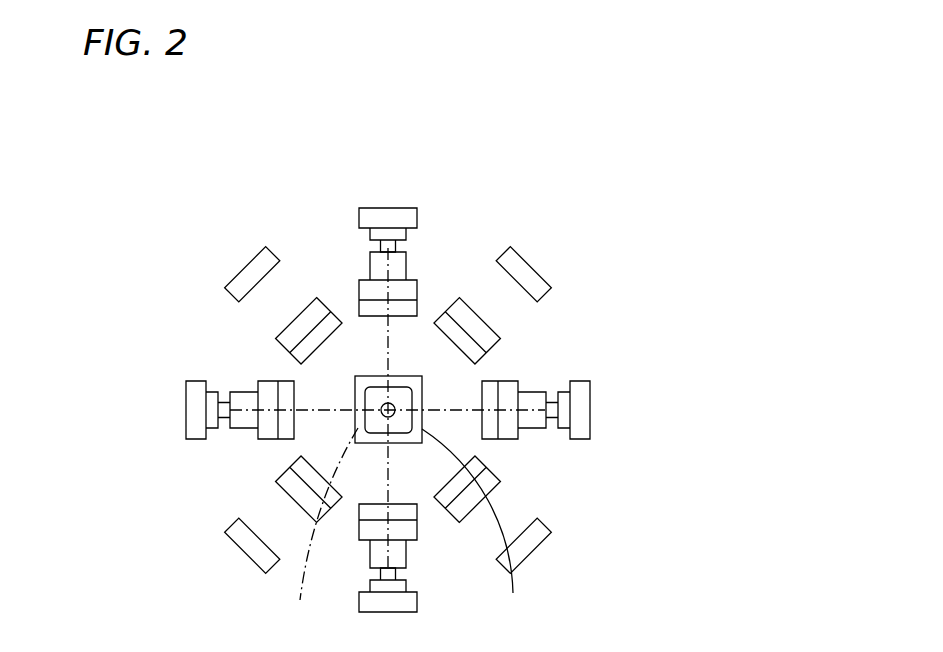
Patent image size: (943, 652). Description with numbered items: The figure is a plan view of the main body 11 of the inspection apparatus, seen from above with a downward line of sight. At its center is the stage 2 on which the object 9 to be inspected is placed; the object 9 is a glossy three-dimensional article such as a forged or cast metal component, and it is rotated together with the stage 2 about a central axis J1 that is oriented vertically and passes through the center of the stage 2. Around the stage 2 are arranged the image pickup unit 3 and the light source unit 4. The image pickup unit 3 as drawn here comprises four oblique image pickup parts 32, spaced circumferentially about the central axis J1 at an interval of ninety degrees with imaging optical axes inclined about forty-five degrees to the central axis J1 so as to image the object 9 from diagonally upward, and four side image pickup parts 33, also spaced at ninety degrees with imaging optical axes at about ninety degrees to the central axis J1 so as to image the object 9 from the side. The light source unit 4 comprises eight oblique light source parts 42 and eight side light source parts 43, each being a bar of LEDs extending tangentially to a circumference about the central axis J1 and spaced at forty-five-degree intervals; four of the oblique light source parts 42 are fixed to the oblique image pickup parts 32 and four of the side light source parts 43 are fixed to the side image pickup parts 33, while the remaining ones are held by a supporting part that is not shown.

The stage 2 is at (377, 417).
The image pickup unit 3 is at (138, 205).
The light source unit 4 is at (672, 235).
The object 9 is at (471, 523).
The main body 11 is at (320, 130).
The oblique image pickup part 32 is at (380, 268).
The side image pickup part 33 is at (378, 233).
The oblique light source part 42 is at (405, 292).
The side light source part 43 is at (405, 218).
The central axis J1 is at (323, 525).